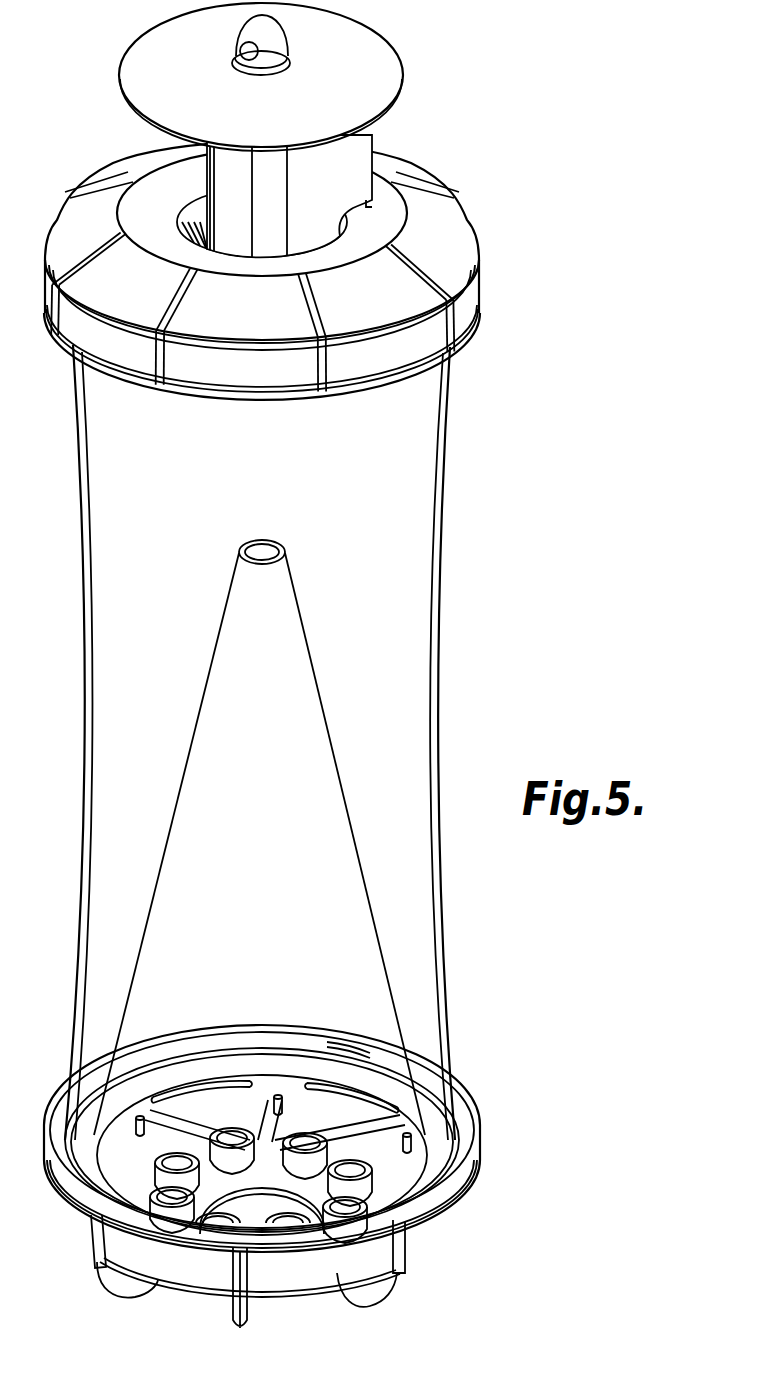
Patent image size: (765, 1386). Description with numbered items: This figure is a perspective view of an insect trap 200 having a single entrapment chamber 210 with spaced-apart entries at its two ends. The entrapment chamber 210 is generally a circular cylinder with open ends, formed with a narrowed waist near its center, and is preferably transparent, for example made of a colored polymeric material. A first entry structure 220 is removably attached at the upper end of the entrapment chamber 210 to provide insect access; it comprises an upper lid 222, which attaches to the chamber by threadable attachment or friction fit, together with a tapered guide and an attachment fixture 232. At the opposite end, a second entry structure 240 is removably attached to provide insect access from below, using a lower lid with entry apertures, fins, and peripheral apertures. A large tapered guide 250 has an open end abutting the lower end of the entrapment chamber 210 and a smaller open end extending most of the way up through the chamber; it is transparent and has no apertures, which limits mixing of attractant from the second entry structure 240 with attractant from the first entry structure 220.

The insect trap 200 is at (560, 367).
The entrapment chamber 210 is at (442, 562).
The first entry structure 220 is at (445, 178).
The upper lid 222 is at (453, 238).
The attachment fixture 232 is at (402, 58).
The second entry structure 240 is at (482, 1145).
The large tapered guide 250 is at (330, 725).